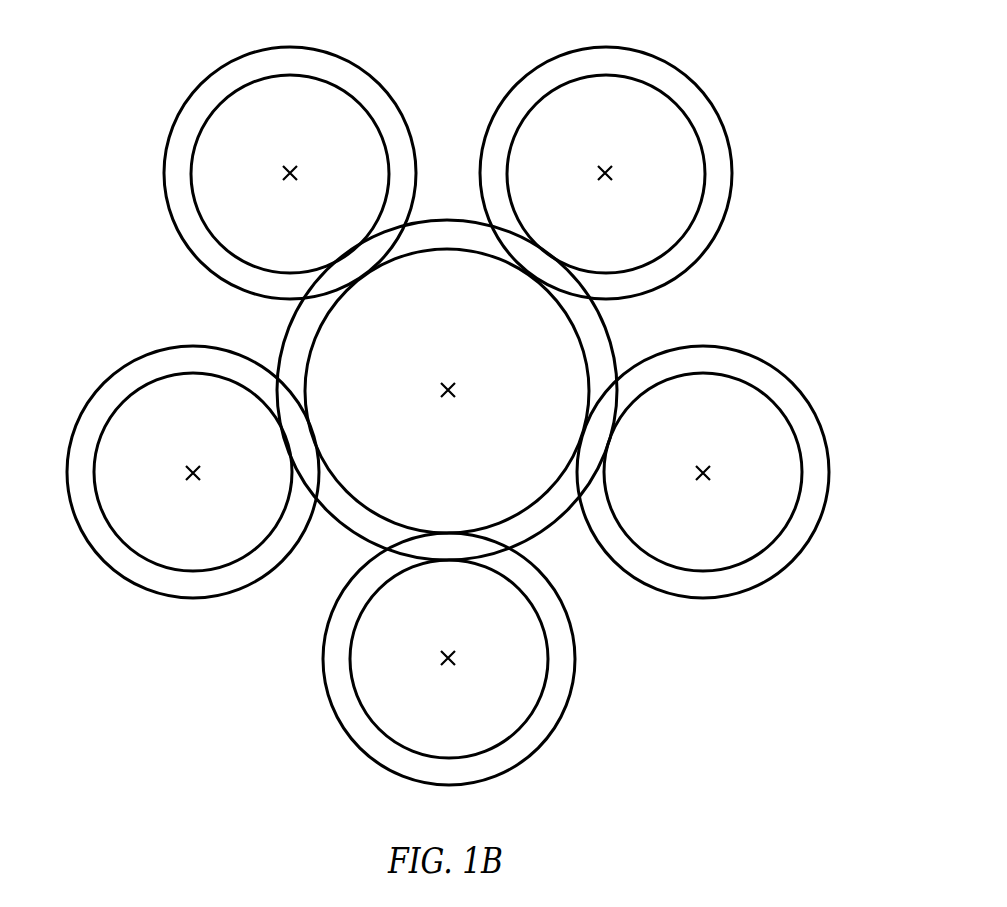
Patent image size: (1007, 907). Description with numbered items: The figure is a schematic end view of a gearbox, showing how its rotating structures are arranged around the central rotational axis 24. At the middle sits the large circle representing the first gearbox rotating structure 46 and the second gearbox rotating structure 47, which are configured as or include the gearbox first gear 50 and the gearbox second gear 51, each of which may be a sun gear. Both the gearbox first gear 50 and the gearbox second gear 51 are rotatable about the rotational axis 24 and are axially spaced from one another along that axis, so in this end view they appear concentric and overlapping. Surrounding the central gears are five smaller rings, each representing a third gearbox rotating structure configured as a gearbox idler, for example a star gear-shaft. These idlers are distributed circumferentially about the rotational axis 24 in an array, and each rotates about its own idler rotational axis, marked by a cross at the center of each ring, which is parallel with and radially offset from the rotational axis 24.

The rotational axis 24 is at (456, 389).
The first gearbox rotating structure 46 is at (445, 431).
The second gearbox rotating structure 47 is at (445, 431).
The gearbox first gear 50 is at (475, 431).
The gearbox second gear 51 is at (550, 532).